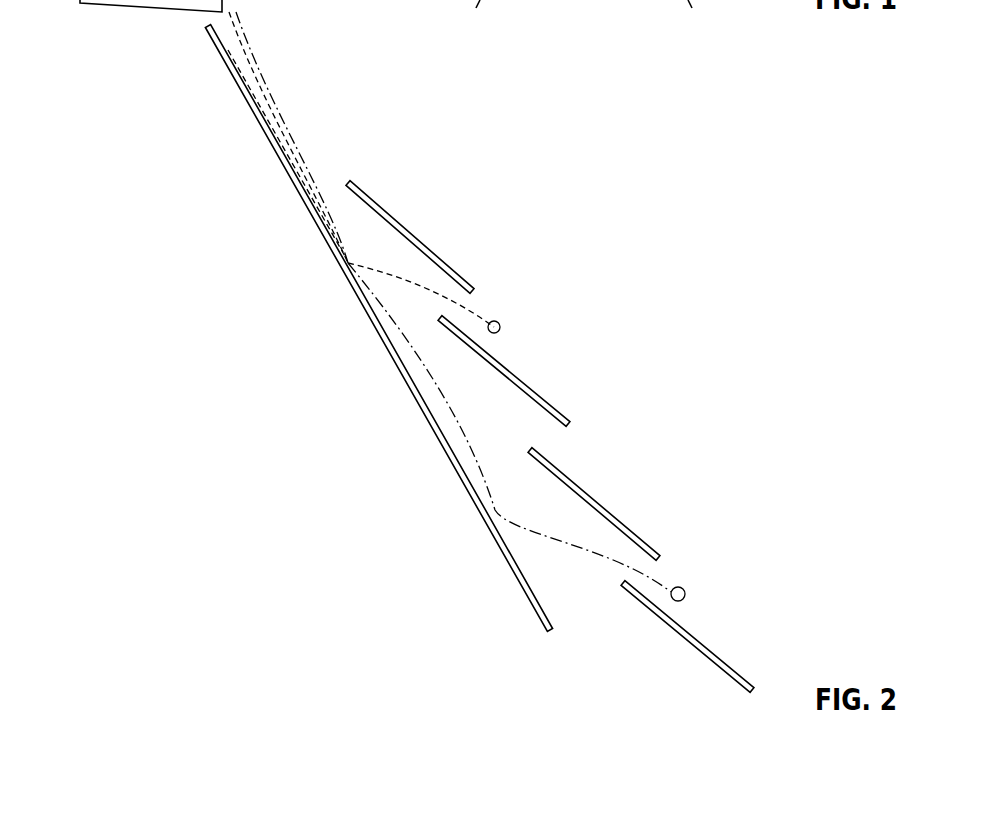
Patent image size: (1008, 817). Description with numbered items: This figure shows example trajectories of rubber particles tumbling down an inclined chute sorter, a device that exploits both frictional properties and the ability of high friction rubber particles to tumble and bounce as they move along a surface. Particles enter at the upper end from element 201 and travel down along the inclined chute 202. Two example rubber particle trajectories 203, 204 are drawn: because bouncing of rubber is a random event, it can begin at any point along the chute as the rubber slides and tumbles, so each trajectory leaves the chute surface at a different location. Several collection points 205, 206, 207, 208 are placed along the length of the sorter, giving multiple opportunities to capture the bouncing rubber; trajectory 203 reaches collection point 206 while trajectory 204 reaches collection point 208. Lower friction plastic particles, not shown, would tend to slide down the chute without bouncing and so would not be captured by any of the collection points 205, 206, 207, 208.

The light source 201 is at (153, 10).
The first mirror 202 is at (308, 209).
The rubber particle trajectory 203 is at (500, 326).
The rubber particle trajectory 204 is at (686, 592).
The collection point 205 is at (347, 182).
The collection point 206 is at (440, 314).
The collection point 207 is at (531, 450).
The collection point 208 is at (624, 583).